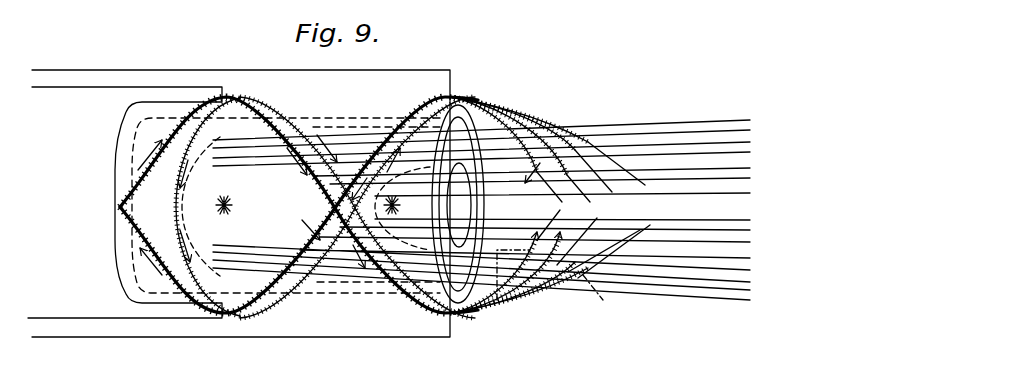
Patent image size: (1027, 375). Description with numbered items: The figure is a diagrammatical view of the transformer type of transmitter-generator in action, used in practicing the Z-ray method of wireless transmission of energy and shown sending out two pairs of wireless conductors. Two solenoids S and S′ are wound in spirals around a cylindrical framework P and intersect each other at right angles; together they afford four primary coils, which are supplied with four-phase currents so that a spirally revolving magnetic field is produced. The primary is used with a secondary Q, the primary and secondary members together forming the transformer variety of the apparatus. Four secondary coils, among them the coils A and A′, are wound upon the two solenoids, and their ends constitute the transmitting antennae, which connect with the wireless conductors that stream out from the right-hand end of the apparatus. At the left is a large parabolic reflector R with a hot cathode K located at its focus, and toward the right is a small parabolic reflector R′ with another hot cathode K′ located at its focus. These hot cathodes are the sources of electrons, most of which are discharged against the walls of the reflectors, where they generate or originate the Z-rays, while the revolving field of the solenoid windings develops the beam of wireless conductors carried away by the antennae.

The cylindrical framework P is at (303, 305).
The secondary Q is at (327, 117).
The solenoid S is at (327, 211).
The solenoid S′ is at (303, 117).
The large parabolic reflector R is at (300, 125).
The small parabolic reflector R′ is at (476, 205).
The hot cathode K is at (233, 207).
The hot cathode K′ is at (388, 225).
The secondary coil A is at (540, 118).
The secondary coil A′ is at (578, 131).